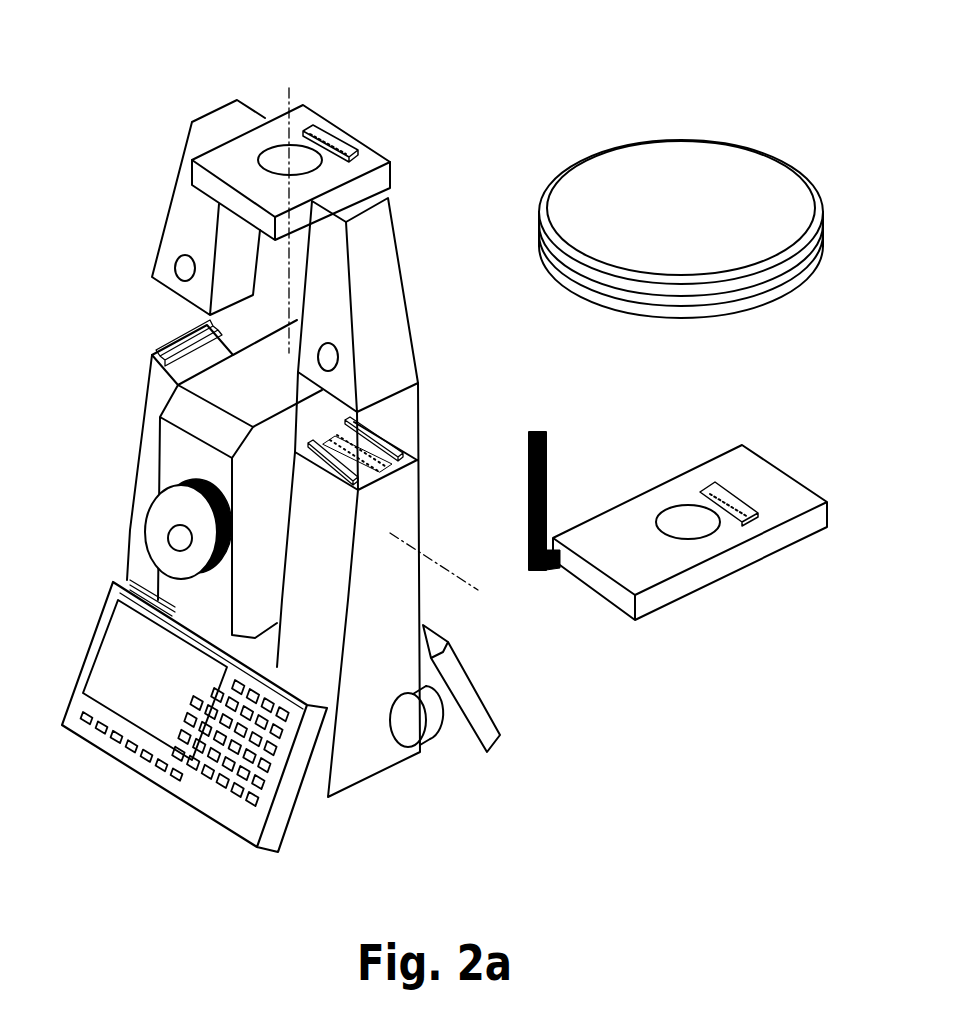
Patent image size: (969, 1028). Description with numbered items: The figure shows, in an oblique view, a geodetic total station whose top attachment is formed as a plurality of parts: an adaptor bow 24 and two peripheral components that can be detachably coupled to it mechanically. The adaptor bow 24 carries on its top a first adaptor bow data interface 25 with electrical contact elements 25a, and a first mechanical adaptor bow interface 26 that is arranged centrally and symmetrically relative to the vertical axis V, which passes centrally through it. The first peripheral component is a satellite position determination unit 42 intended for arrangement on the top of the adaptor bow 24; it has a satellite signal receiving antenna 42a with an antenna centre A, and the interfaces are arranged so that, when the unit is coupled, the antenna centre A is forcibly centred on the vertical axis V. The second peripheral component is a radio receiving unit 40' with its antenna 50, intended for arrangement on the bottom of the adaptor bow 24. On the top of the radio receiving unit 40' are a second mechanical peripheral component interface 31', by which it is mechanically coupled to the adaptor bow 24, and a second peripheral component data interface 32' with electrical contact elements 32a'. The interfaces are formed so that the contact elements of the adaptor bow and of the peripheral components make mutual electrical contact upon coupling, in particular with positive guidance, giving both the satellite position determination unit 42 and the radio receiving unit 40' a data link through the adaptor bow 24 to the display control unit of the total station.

The adaptor bow 24 is at (382, 300).
The first adaptor bow data interface 25 is at (323, 128).
The electrical contact elements 25a is at (330, 140).
The first mechanical adaptor bow interface 26 is at (310, 168).
The vertical axis V is at (290, 88).
The satellite position determination unit 42 is at (705, 177).
The satellite signal receiving antenna 42a is at (737, 187).
The antenna centre A is at (680, 207).
The radio receiving unit 40' is at (692, 491).
The second mechanical peripheral component interface 31' is at (721, 451).
The second peripheral component data interface 32' is at (778, 464).
The electrical contact elements 32a' is at (773, 460).
The antenna 50 is at (548, 453).